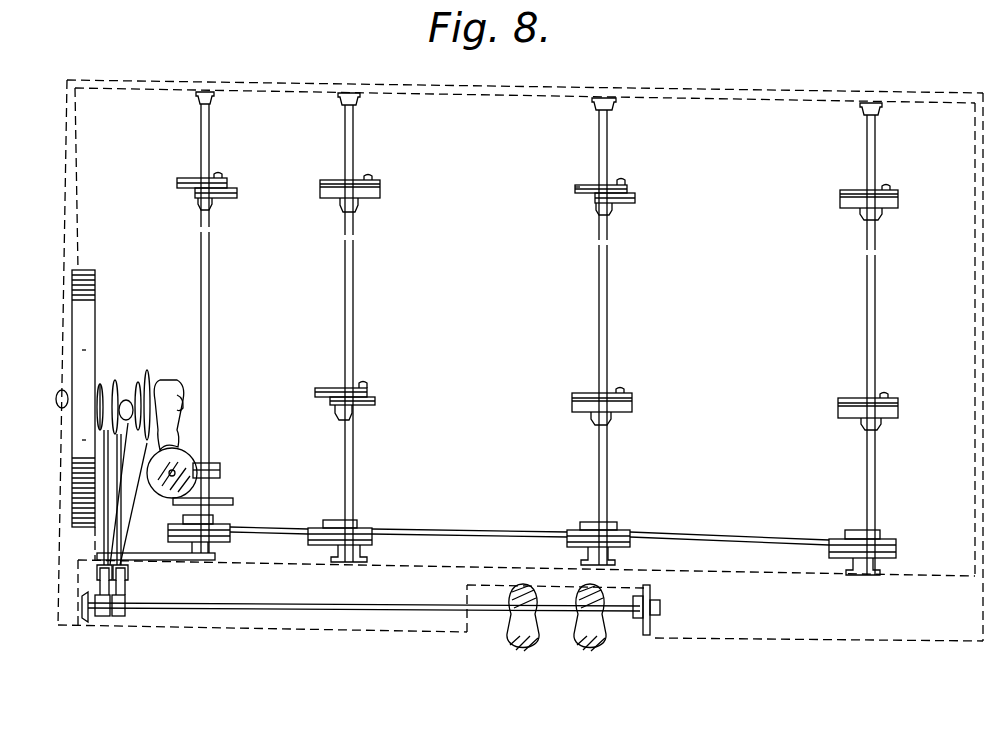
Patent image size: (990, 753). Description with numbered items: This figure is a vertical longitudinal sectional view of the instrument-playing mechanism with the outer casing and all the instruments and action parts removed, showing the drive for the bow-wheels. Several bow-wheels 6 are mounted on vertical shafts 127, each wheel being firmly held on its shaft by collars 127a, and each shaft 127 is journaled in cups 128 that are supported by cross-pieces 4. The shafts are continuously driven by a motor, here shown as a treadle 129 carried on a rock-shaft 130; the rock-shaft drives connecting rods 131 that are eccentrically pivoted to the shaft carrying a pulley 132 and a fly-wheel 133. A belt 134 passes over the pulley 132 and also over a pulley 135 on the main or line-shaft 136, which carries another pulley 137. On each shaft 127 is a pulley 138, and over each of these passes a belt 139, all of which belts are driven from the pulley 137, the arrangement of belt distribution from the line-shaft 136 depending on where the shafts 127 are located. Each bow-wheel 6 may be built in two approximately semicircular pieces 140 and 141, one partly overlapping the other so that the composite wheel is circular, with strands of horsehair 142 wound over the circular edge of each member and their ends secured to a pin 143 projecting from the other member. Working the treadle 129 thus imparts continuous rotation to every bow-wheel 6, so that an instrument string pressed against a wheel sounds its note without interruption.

The cross-pieces 4 is at (933, 102).
The bow-wheel 6 is at (380, 195).
The shaft 127 is at (209, 290).
The collar 127a is at (212, 206).
The cup 128 is at (361, 99).
The treadle 129 is at (594, 642).
The rock-shaft 130 is at (337, 611).
The connecting rods 131 is at (119, 545).
The pulley 132 is at (150, 372).
The fly-wheel 133 is at (82, 433).
The belt 134 is at (185, 462).
The pulley 135 is at (233, 501).
The shaft 136 is at (220, 472).
The pulley 137 is at (230, 533).
The pulley 138 is at (372, 534).
The belt 139 is at (468, 532).
The semicircular piece 140 is at (624, 205).
The semicircular piece 141 is at (576, 188).
The horsehair strands 142 is at (212, 178).
The pin 143 is at (224, 178).